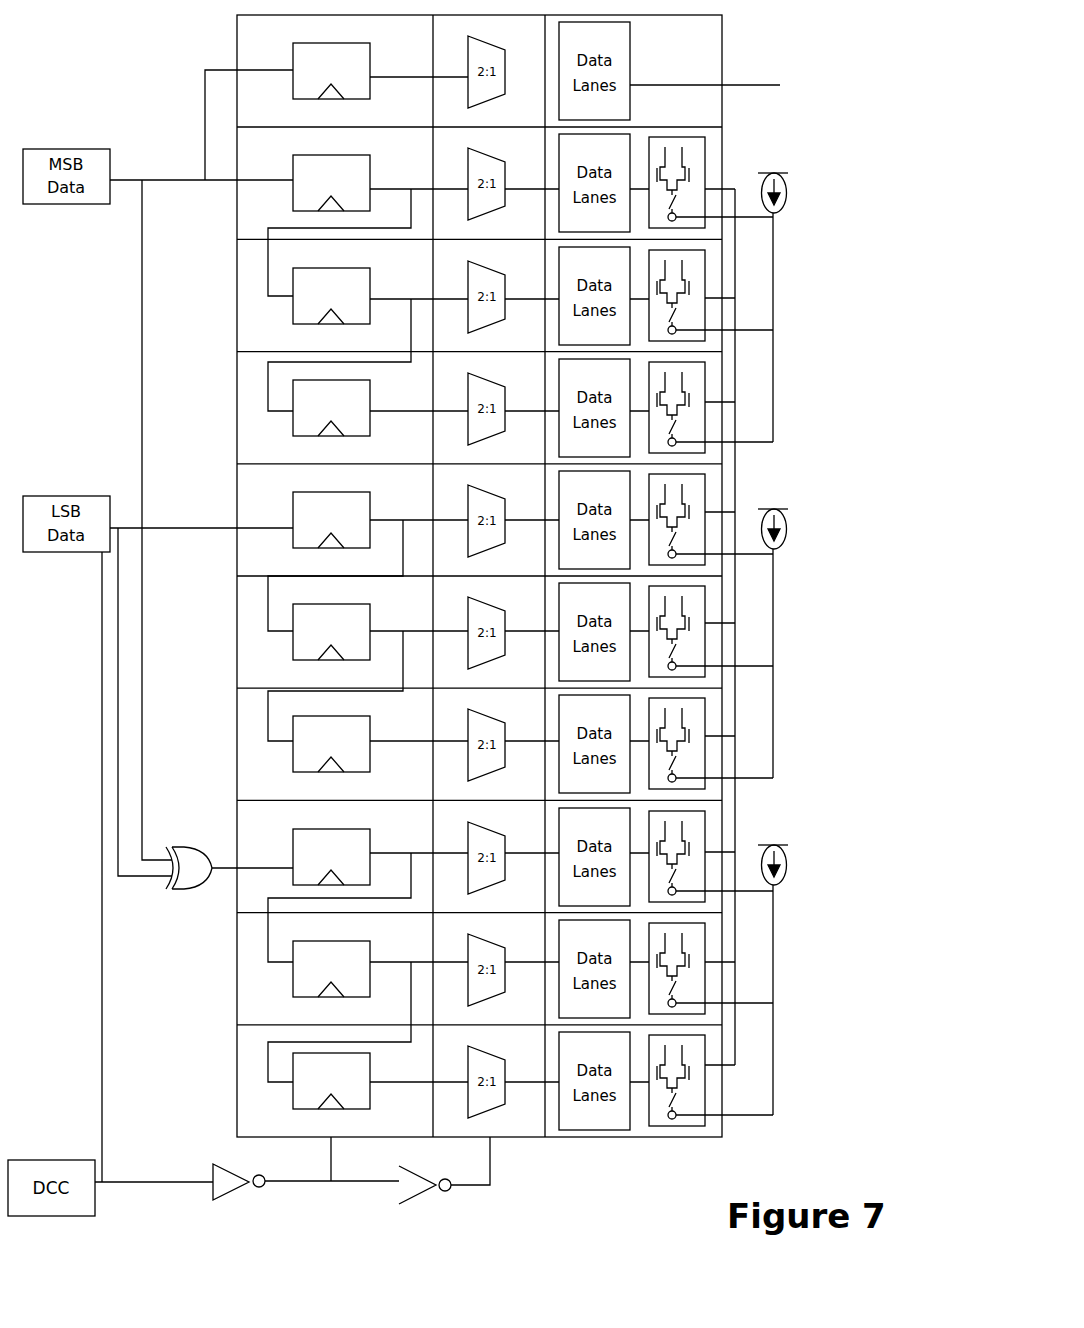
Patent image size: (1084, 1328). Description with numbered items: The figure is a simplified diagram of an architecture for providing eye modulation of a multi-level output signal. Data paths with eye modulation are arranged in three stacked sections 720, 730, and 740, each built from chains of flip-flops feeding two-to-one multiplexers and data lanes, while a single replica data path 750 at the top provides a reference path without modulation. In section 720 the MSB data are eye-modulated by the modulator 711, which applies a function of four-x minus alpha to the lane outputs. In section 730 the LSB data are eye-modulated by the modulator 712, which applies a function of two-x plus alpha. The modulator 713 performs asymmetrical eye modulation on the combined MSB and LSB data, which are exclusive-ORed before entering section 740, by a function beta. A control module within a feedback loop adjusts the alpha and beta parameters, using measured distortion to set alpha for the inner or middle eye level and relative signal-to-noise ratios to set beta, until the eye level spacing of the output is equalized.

The modulator 711 is at (760, 173).
The modulator 712 is at (775, 509).
The modulator 713 is at (776, 845).
The section 720 is at (237, 352).
The section 730 is at (237, 749).
The section 740 is at (237, 1098).
The data path 750 is at (237, 37).